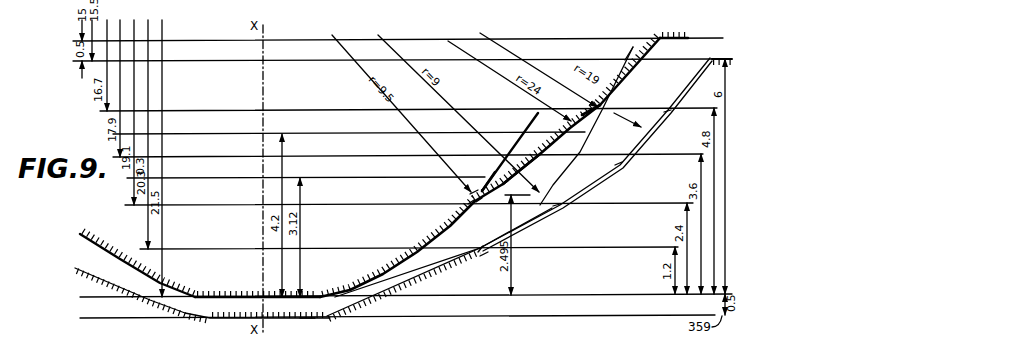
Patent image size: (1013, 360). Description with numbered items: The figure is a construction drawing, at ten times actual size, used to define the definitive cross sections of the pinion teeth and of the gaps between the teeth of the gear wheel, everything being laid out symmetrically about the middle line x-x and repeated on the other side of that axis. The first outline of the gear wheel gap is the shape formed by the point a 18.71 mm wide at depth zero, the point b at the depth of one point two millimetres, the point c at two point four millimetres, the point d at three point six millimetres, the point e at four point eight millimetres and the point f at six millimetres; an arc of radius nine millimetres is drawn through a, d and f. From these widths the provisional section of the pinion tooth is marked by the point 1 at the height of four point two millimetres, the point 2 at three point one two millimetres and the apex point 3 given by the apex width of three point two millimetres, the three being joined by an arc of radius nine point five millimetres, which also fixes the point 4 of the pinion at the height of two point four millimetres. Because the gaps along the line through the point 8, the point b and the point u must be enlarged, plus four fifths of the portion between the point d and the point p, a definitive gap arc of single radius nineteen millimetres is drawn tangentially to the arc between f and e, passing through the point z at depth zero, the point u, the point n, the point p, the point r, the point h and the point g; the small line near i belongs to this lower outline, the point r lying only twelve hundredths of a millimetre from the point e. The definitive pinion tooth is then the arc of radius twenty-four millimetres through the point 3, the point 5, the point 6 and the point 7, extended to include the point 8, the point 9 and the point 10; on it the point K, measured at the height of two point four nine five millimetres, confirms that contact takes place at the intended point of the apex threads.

The point of the pinion tooth section 1 is at (522, 132).
The point of the pinion tooth section 2 is at (494, 182).
The apex point of the pinion tooth 3 is at (322, 296).
The point of the pinion at height 2.40 mm 4 is at (470, 198).
The point of the definitive pinion tooth shape 5 is at (416, 250).
The point of the definitive pinion tooth shape 6 is at (478, 200).
The point of the definitive pinion tooth shape 7 is at (538, 158).
The point of the definitive pinion tooth shape 8 is at (598, 106).
The point of the definitive pinion tooth shape 9 is at (634, 60).
The point of the definitive pinion tooth shape 10 is at (661, 38).
The point k of the pinion tooth arc K is at (475, 186).
The point of the gear wheel gap section at depth zero a is at (626, 56).
The point of the gear wheel gap section at depth 1.20 mm b is at (624, 118).
The point of the gear wheel gap section at depth 2.40 mm c is at (582, 160).
The point of the gear wheel gap section at depth 3.60 mm d is at (541, 217).
The point of the gear wheel gap section at depth 4.80 mm e is at (481, 248).
The point of the gear wheel gap section at depth 6 mm f is at (342, 290).
The point of the definitive gap arc at depth 6.00 mm g is at (373, 295).
The point of the definitive gap arc h is at (436, 269).
The point i is at (312, 317).
The point of the definitive gap arc at depth 2.40 mm n is at (616, 152).
The point of the definitive gap arc at depth 3.60 mm p is at (555, 203).
The point of the definitive gap arc at depth 4.80 mm r is at (484, 254).
The point of the definitive gap arc at depth 1.20 mm u is at (666, 108).
The point of the definitive gap arc at depth zero z is at (710, 58).